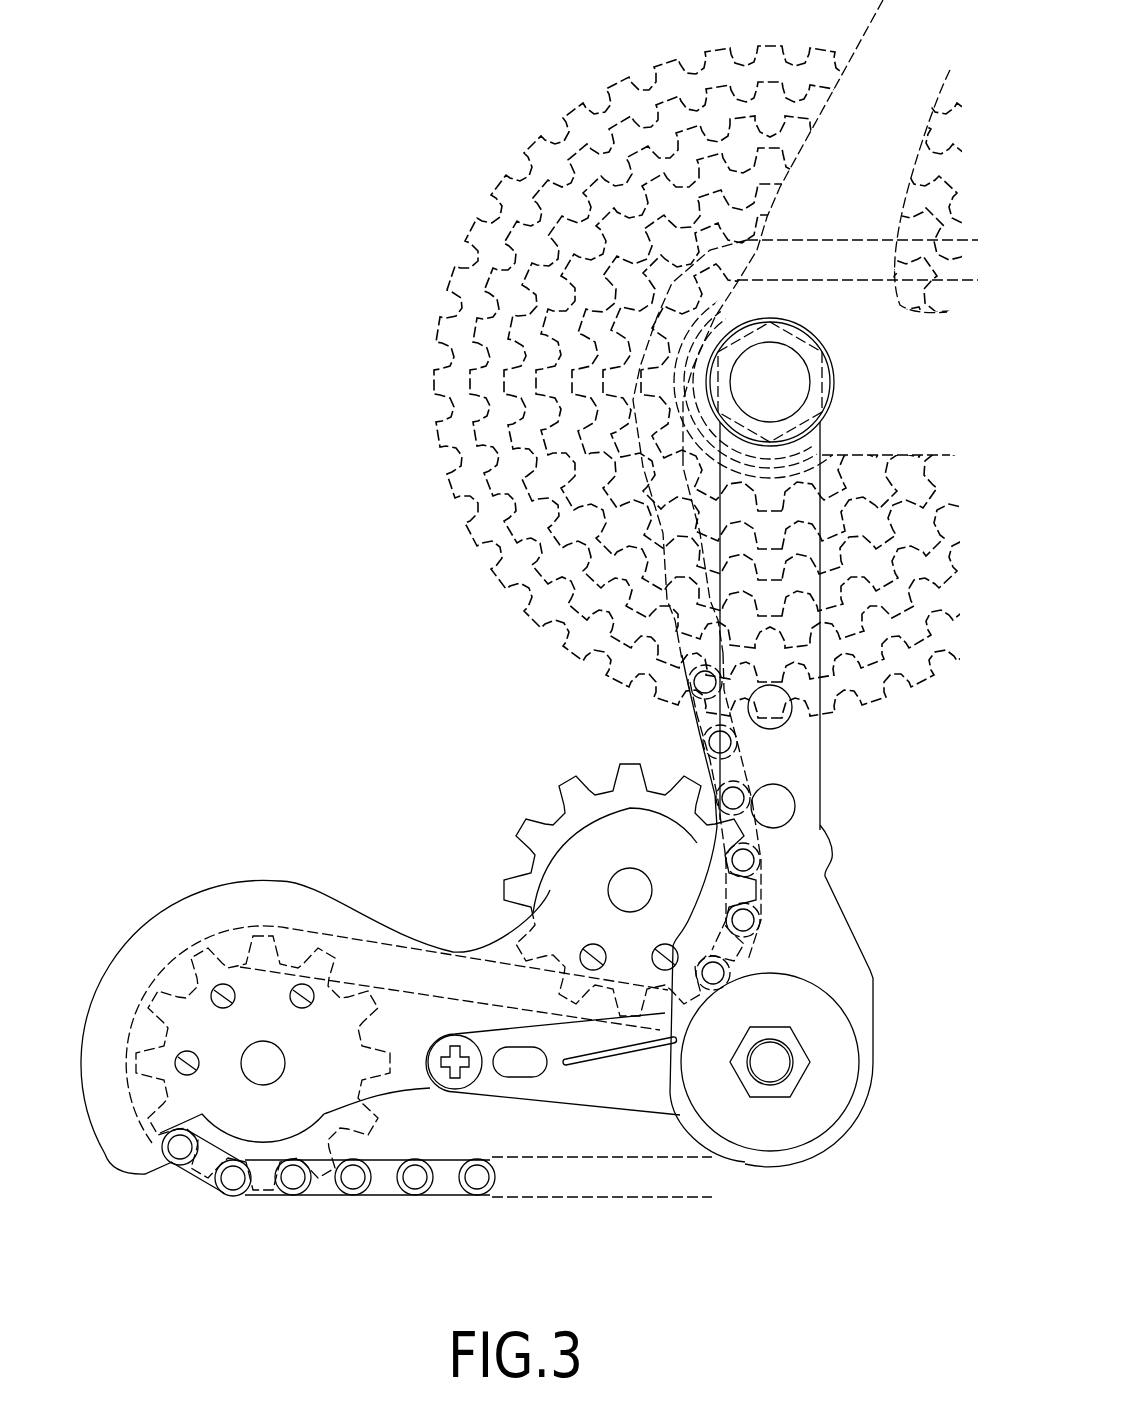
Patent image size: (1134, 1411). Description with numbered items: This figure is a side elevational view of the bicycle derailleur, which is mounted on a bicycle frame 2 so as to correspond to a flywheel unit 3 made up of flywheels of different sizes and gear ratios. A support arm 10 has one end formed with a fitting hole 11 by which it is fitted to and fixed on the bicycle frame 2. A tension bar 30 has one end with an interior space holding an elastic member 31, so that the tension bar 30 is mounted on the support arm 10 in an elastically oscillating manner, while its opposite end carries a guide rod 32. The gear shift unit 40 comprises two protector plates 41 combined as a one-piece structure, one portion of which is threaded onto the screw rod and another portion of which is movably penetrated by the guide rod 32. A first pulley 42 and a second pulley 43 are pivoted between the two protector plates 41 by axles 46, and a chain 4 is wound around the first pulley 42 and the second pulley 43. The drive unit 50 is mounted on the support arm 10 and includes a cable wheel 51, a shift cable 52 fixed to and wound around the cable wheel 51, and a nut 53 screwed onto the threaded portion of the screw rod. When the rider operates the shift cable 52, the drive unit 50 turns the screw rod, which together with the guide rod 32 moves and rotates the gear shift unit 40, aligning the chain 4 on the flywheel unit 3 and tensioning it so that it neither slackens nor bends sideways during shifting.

The bicycle frame 2 is at (790, 195).
The flywheel unit 3 is at (577, 233).
The chain 4 is at (707, 718).
The support arm 10 is at (812, 505).
The fitting hole 11 is at (810, 382).
The tension bar 30 is at (620, 1093).
The elastic member 31 is at (578, 1067).
The guide rod 32 is at (455, 1078).
The gear shift unit 40 is at (205, 852).
The protector plates 41 is at (157, 950).
The first pulley 42 is at (543, 853).
The second pulley 43 is at (262, 1188).
The axles 46 is at (617, 888).
The drive unit 50 is at (717, 1240).
The cable wheel 51 is at (817, 1085).
The shift cable 52 is at (690, 1152).
The nut 53 is at (775, 1090).